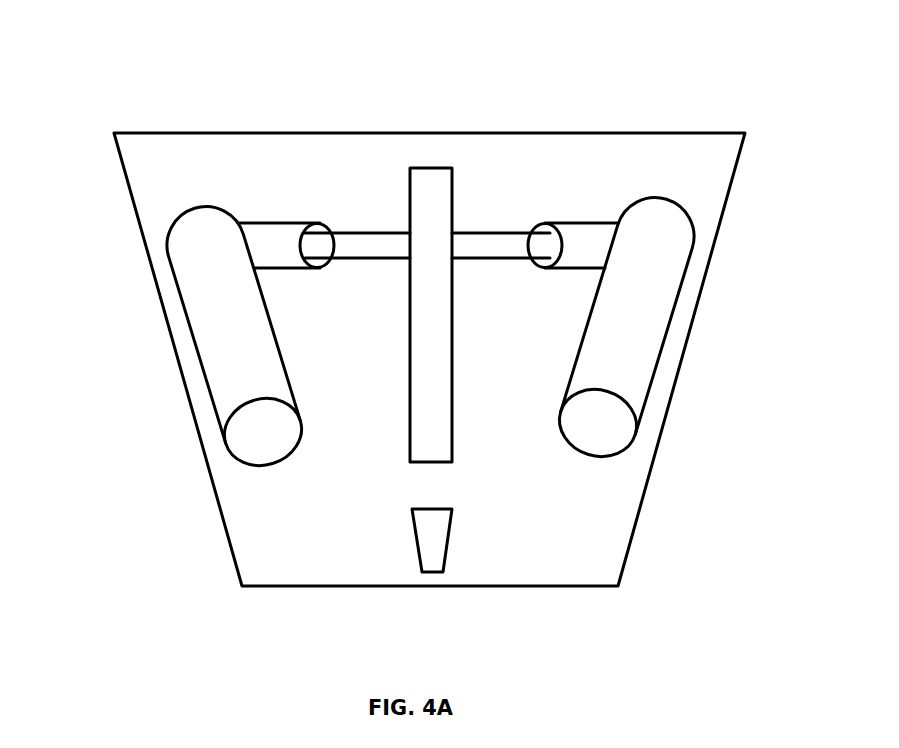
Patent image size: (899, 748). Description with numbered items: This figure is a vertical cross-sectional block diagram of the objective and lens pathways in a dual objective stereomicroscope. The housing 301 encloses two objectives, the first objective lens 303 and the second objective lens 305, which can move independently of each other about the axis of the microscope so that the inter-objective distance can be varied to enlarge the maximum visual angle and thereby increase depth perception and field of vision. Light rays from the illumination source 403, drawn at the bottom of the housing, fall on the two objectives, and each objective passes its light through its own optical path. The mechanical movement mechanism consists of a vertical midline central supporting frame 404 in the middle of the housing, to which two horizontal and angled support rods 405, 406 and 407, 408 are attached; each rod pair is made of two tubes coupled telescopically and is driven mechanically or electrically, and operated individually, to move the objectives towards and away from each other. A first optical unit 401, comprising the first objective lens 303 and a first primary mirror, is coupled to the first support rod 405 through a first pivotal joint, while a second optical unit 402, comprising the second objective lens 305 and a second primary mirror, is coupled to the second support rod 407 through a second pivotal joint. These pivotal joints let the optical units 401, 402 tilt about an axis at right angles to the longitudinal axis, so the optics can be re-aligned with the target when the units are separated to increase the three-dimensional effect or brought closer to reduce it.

The housing 301 is at (170, 330).
The first objective lens 303 is at (237, 462).
The second objective lens 305 is at (603, 445).
The first optical unit 401 is at (180, 218).
The second optical unit 402 is at (640, 218).
The illumination source 403 is at (428, 553).
The vertical midline central supporting frame 404 is at (422, 183).
The first horizontal and angled support rod 405 is at (270, 248).
The horizontal and angled support rod 406 is at (357, 246).
The second horizontal and angled support rod 407 is at (598, 237).
The horizontal and angled support rod 408 is at (487, 238).